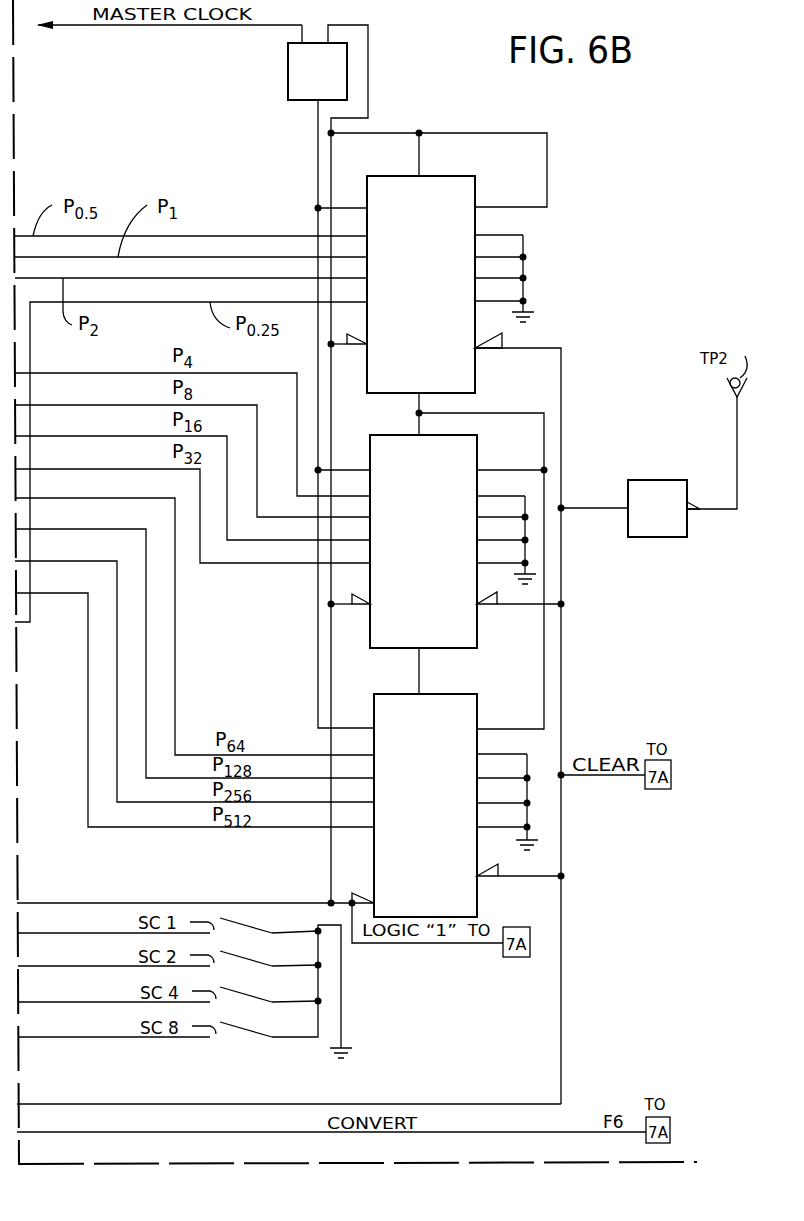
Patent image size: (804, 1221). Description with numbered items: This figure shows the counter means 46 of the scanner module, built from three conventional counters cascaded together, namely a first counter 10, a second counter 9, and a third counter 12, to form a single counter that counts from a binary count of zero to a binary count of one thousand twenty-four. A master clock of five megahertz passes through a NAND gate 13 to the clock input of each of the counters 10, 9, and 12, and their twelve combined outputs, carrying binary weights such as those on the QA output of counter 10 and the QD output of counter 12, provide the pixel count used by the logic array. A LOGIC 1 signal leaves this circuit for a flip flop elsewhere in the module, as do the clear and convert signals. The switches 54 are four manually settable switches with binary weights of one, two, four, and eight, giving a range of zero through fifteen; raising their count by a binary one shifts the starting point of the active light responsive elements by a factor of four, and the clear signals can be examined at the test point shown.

The counter means 46 is at (568, 386).
The switches 54 is at (138, 896).
The logic 1 buffer block 1 is at (664, 508).
The counter U9 9 is at (423, 541).
The counter U10 10 is at (421, 284).
The counter U12 12 is at (425, 805).
The master clock divider U13 13 is at (317, 71).